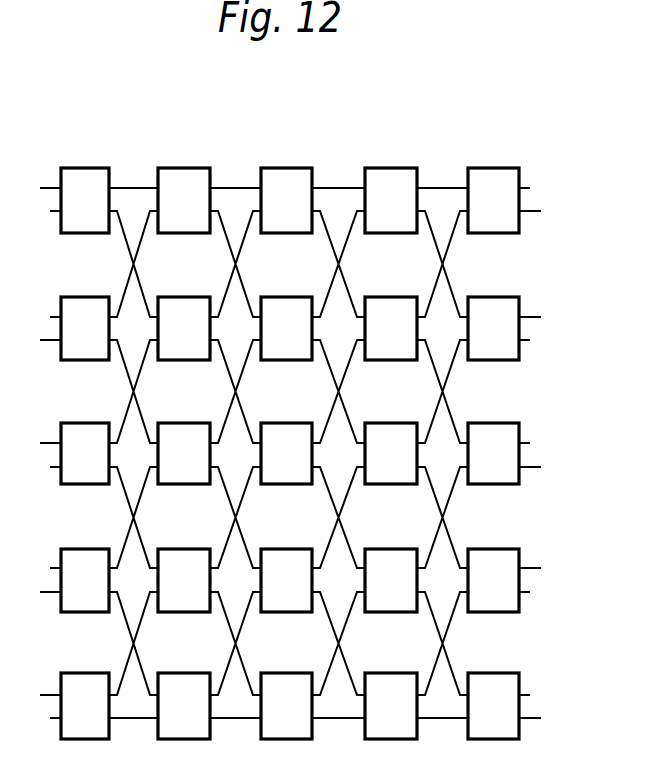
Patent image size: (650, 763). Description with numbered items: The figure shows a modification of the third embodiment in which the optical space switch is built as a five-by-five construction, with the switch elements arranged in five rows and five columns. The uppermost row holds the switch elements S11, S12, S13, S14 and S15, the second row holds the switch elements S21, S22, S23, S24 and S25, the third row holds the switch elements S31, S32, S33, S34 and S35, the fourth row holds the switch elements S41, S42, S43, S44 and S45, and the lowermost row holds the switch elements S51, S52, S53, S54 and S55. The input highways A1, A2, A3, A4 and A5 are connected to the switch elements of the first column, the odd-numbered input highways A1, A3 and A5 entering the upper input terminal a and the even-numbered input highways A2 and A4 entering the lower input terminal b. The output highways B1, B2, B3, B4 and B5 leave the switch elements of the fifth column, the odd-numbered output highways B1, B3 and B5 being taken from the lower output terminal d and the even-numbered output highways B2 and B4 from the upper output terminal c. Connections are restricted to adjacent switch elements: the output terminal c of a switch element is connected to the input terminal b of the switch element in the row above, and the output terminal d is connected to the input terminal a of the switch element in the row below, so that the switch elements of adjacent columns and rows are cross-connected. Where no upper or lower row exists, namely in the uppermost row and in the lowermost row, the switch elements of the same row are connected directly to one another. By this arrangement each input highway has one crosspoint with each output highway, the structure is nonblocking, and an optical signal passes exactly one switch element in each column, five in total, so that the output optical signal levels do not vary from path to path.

The switch element S11 is at (85, 188).
The switch element S12 is at (184, 188).
The switch element S13 is at (286, 188).
The switch element S14 is at (391, 188).
The switch element S15 is at (493, 188).
The switch element S21 is at (85, 316).
The switch element S22 is at (184, 316).
The switch element S23 is at (286, 316).
The switch element S24 is at (391, 328).
The switch element S25 is at (493, 328).
The switch element S31 is at (85, 441).
The switch element S32 is at (184, 441).
The switch element S33 is at (286, 441).
The switch element S34 is at (391, 453).
The switch element S35 is at (493, 453).
The switch element S41 is at (85, 568).
The switch element S42 is at (184, 568).
The switch element S43 is at (286, 568).
The switch element S44 is at (391, 580).
The switch element S45 is at (493, 580).
The switch element S51 is at (85, 693).
The switch element S52 is at (184, 693).
The switch element S53 is at (286, 693).
The switch element S54 is at (391, 693).
The switch element S55 is at (493, 693).
The input highway A1 is at (35, 193).
The input highway A2 is at (35, 334).
The input highway A3 is at (35, 449).
The input highway A4 is at (35, 586).
The input highway A5 is at (35, 700).
The output highway B1 is at (545, 205).
The output highway B2 is at (545, 322).
The output highway B3 is at (545, 461).
The output highway B4 is at (545, 574).
The output highway B5 is at (545, 712).